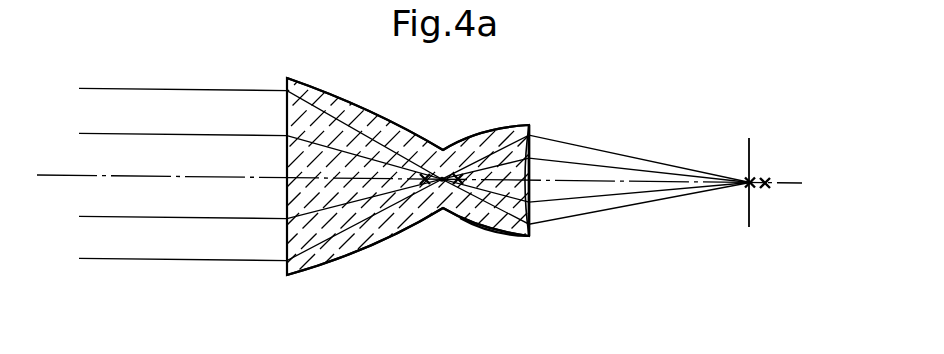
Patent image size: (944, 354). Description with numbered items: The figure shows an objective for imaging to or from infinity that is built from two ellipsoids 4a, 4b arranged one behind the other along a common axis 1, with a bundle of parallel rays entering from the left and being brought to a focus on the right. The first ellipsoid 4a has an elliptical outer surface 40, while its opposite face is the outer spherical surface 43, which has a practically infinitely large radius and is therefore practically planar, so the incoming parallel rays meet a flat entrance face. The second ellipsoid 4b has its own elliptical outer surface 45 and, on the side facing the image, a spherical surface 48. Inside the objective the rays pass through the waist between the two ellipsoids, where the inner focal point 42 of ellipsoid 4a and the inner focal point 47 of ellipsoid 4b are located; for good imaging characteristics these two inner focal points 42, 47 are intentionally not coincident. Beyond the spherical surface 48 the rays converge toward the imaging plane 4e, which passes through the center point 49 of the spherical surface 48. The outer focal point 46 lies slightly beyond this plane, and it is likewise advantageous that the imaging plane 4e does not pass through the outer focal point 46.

The optical axis / light beam 1 is at (98, 176).
The outer surface 40 is at (320, 266).
The ellipsoid 4a is at (385, 118).
The ellipsoid 4b is at (483, 143).
The outer spherical surface 43 is at (287, 124).
The inner focal point 42 is at (423, 181).
The inner focal point 47 is at (459, 187).
The outer surface 45 is at (497, 231).
The spherical surface 48 is at (530, 143).
The imaging plane 4e is at (748, 151).
The center point 49 is at (750, 184).
The outer focal point 46 is at (766, 188).